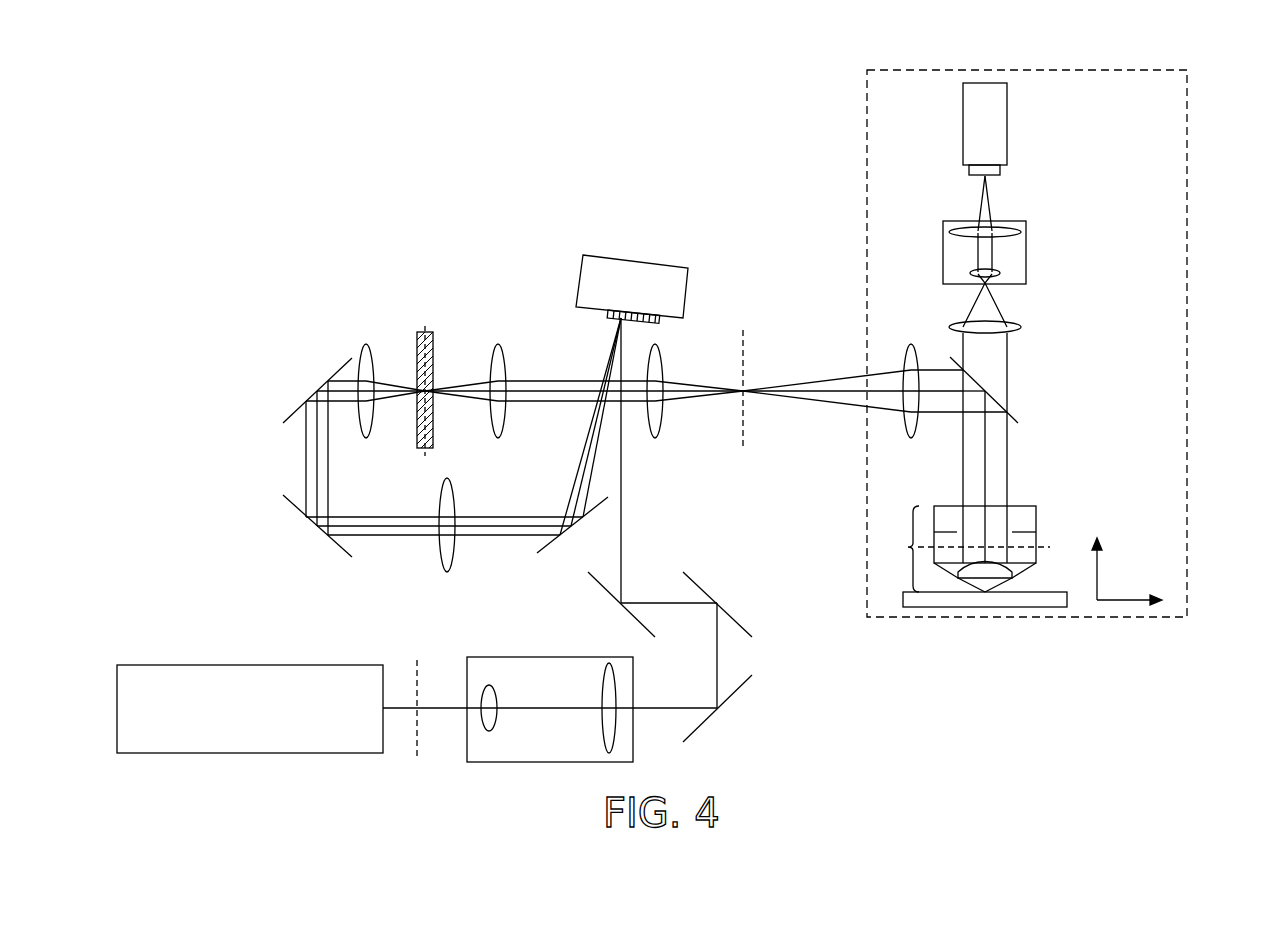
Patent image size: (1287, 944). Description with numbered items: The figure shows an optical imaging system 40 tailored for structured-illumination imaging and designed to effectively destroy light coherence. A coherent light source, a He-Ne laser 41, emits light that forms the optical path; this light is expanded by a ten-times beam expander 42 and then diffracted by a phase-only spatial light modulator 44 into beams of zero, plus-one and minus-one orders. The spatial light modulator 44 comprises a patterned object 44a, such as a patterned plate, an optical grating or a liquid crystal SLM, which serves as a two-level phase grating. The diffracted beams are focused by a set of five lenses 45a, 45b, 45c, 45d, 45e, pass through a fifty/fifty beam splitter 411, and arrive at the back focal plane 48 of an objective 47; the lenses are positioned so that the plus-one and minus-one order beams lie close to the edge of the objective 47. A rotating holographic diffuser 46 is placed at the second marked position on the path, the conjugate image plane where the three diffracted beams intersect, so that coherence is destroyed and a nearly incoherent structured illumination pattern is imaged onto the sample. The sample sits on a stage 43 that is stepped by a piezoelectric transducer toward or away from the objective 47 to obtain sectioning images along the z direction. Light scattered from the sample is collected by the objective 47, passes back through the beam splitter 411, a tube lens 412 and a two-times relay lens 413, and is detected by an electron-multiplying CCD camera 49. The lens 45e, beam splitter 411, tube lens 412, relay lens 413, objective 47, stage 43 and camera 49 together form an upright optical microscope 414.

The optical imaging system 40 is at (213, 120).
The He-Ne laser 41 is at (250, 665).
The beam expander 42 is at (550, 657).
The stage 43 is at (985, 607).
The spatial light modulator 44 is at (688, 290).
The patterned object 44a is at (607, 316).
The lens 45a is at (447, 573).
The lens 45b is at (366, 343).
The lens 45c is at (498, 343).
The lens 45d is at (652, 440).
The lens 45e is at (912, 345).
The rotating holographic diffuser 46 is at (433, 342).
The objective 47 is at (900, 549).
The back focal plane 48 is at (1045, 543).
The CCD camera 49 is at (1007, 122).
The beam splitter 411 is at (1018, 418).
The tube lens 412 is at (1022, 327).
The relay lens 413 is at (1026, 250).
The optical microscope 414 is at (1187, 343).